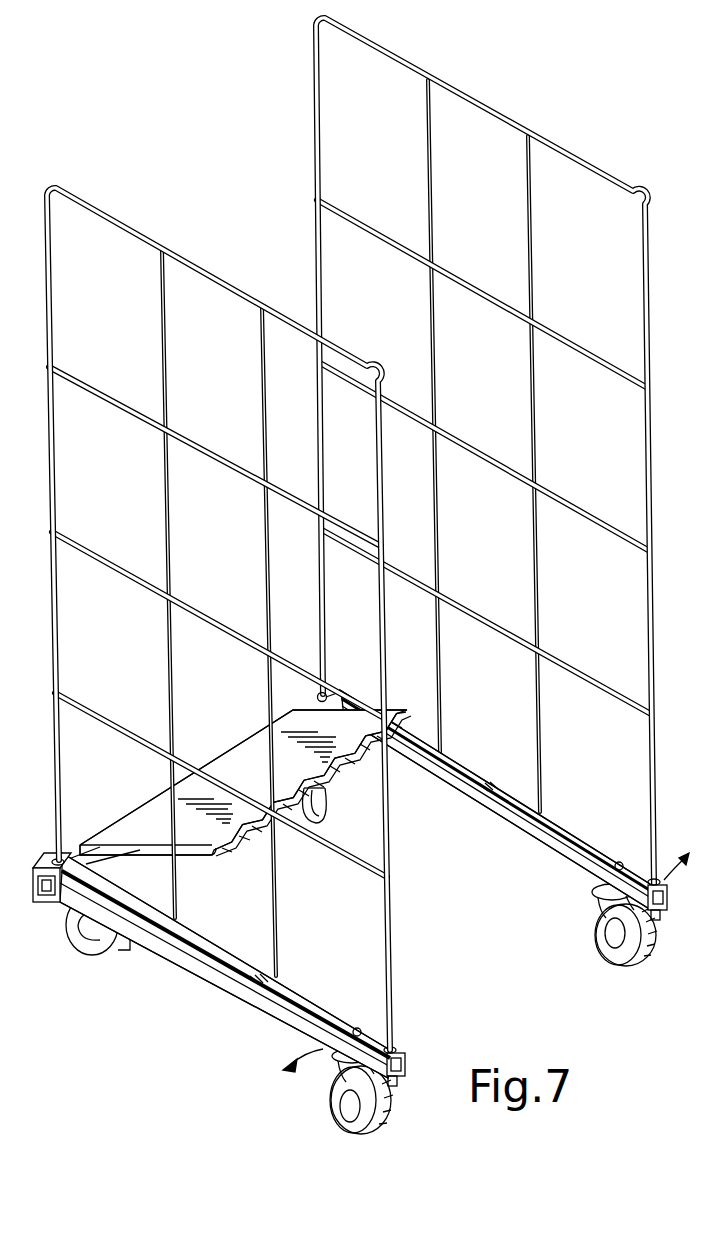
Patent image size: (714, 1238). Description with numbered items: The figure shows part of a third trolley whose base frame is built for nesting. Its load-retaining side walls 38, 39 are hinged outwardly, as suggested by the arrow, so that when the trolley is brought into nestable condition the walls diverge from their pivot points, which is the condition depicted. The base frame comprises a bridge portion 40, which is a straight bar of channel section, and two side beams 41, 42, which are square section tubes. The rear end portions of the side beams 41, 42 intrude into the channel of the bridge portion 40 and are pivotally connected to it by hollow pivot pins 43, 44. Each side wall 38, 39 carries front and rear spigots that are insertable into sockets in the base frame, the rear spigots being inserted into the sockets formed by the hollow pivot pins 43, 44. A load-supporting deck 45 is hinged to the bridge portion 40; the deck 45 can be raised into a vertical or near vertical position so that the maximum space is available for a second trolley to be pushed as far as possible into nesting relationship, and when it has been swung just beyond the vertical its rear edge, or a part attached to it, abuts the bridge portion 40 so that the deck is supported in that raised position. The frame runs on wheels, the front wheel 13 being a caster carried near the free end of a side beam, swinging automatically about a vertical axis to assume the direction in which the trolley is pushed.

The front wheel 13 is at (353, 1113).
The side wall 38 is at (388, 915).
The side wall 39 is at (651, 823).
The bridge portion 40 is at (140, 800).
The side beam 41 is at (270, 988).
The side beam 42 is at (524, 833).
The hollow pivot pin 43 is at (57, 866).
The hollow pivot pin 44 is at (318, 693).
The load-supporting deck 45 is at (360, 760).